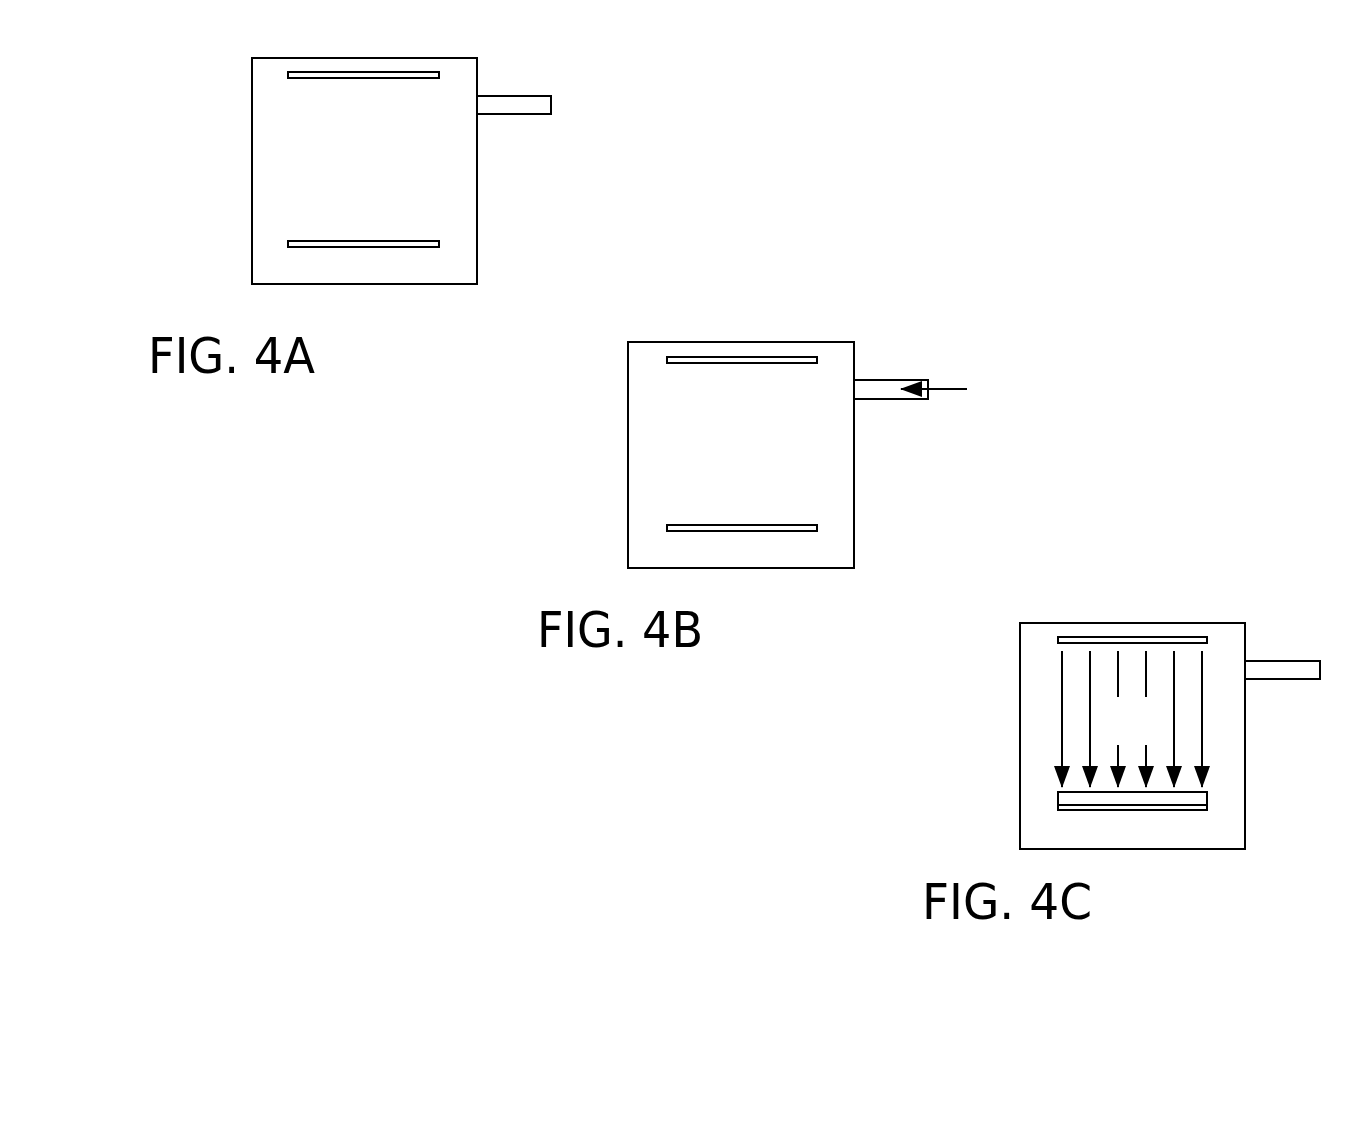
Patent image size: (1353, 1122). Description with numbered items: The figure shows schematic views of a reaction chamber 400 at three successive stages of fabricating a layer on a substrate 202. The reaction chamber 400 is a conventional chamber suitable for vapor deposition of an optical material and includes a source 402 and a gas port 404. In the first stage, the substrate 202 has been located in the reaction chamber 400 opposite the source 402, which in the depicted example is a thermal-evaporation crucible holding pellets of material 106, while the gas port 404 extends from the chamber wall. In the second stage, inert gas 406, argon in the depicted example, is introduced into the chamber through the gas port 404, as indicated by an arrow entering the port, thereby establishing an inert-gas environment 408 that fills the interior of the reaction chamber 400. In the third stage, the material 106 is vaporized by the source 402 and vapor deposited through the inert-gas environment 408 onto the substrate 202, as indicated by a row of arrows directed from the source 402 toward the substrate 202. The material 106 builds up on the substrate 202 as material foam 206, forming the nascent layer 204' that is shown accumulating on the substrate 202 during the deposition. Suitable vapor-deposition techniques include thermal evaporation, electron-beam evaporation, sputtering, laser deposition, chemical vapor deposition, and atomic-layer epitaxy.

In FIG. 4A, the reaction chamber 400 is at (222, 80).
In FIG. 4B, the reaction chamber 400 is at (606, 362).
In FIG. 4C, the reaction chamber 400 is at (996, 644).
In FIG. 4A, the source 402 is at (305, 79).
In FIG. 4B, the source 402 is at (683, 364).
In FIG. 4A, the substrate 202 is at (363, 240).
In FIG. 4A, the gas port 404 is at (525, 95).
In FIG. 4B, the inert gas 406 is at (949, 372).
In FIG. 4B, the inert-gas environment 408 is at (732, 479).
In FIG. 4C, the inert-gas environment 408 is at (1148, 729).
In FIG. 4C, the material 106 is at (1056, 725).
In FIG. 4C, the nascent layer 204' is at (1064, 795).
In FIG. 4C, the material foam 206 is at (1113, 798).